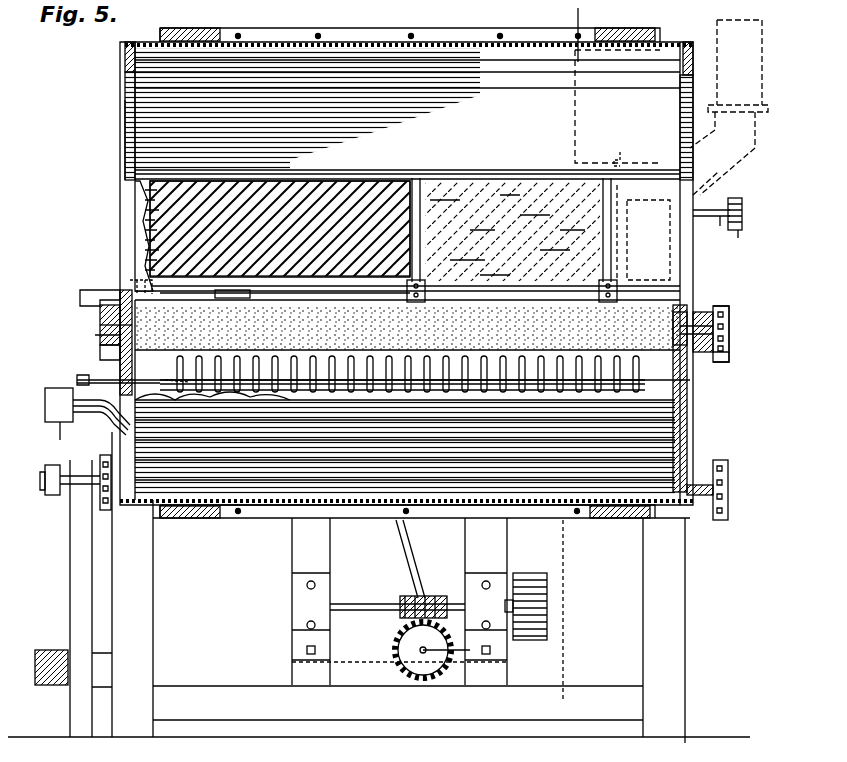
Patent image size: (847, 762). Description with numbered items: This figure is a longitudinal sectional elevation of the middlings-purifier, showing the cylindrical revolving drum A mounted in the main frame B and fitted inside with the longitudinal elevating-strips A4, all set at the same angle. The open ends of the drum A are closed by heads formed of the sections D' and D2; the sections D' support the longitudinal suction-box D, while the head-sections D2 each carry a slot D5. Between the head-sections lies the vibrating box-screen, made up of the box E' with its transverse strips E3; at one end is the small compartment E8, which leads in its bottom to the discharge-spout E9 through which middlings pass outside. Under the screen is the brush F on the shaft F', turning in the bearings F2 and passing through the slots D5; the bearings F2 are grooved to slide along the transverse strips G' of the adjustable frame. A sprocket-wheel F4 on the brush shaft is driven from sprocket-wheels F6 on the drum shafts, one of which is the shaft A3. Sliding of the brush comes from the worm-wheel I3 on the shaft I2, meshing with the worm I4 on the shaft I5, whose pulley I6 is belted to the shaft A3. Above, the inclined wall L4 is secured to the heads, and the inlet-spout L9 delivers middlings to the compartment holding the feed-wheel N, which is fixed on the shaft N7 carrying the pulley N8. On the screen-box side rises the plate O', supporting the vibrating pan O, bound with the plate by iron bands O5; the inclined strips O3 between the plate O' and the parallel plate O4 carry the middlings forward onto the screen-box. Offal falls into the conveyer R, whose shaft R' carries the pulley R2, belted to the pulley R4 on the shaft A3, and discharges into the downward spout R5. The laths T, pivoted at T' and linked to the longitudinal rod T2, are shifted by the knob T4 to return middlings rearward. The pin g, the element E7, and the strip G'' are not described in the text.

The revolving drum A is at (690, 52).
The elevating-strips A4 is at (440, 62).
The shaft A3 is at (100, 490).
The main frame B is at (678, 660).
The pin g is at (573, 31).
The suction-box D is at (459, 106).
The head-section D' is at (106, 140).
The head-section D2 is at (180, 382).
The slot D5 is at (130, 296).
The box E' is at (285, 287).
The transverse strips E3 is at (250, 292).
The catch E7 is at (622, 152).
The small compartment E8 is at (135, 290).
The discharge-spout E9 is at (82, 297).
The brush F is at (407, 327).
The shaft F' is at (370, 315).
The bearings F2 is at (100, 338).
The sprocket-wheel F4 is at (730, 345).
The sprocket-wheels F6 is at (728, 472).
The transverse strips G' is at (400, 368).
The slotted plate G'' is at (727, 315).
The shaft I2 is at (420, 650).
The worm-wheel I3 is at (420, 668).
The worm I4 is at (415, 560).
The shaft I5 is at (380, 595).
The pulley I6 is at (547, 612).
The inclined wall L4 is at (140, 140).
The inlet-spout L9 is at (729, 107).
The middlings feed-wheel N is at (705, 182).
The shaft N7 is at (715, 228).
The pulley N8 is at (725, 202).
The vibrating pan O is at (407, 219).
The plate O' is at (547, 231).
The inclined strips O3 is at (240, 185).
The plate O4 is at (318, 185).
The iron bands O5 is at (400, 282).
The conveyer R is at (405, 448).
The shaft R' is at (50, 438).
The pulley R2 is at (50, 395).
The pulley R4 is at (45, 482).
The spout R5 is at (70, 598).
The laths T is at (408, 373).
The pivots T' is at (406, 375).
The longitudinal rod T2 is at (625, 388).
The knob T4 is at (77, 381).